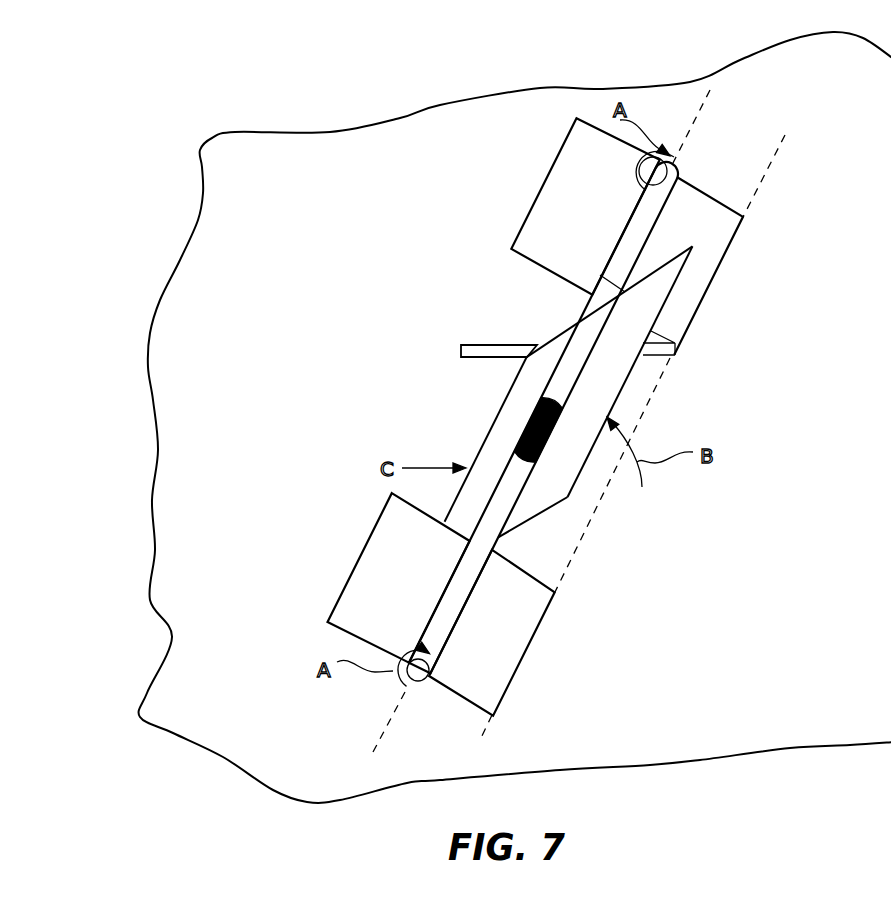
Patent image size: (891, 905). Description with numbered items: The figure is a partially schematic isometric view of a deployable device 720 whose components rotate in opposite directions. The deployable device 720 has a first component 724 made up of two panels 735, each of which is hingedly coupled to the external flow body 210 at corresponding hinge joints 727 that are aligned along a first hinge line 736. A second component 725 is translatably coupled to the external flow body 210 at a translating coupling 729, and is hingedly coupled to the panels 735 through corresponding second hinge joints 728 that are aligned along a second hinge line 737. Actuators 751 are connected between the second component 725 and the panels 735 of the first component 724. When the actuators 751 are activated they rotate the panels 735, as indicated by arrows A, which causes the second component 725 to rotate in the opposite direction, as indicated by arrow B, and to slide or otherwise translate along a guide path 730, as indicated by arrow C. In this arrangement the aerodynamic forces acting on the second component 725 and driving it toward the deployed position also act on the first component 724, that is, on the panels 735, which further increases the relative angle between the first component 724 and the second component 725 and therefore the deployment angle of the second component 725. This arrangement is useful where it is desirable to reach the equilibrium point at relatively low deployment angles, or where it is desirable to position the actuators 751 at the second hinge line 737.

The external flow body 210 is at (227, 187).
The deployable device 720 is at (468, 140).
The first component 724 is at (484, 251).
The second component 725 is at (617, 402).
The hinge joints 727 is at (722, 258).
The second hinge joints 728 is at (688, 176).
The translating coupling 729 is at (477, 388).
The guide path 730 is at (480, 346).
The panels 735 is at (560, 142).
The first hinge line 736 is at (483, 742).
The second hinge line 737 is at (387, 727).
The actuators 751 is at (601, 278).